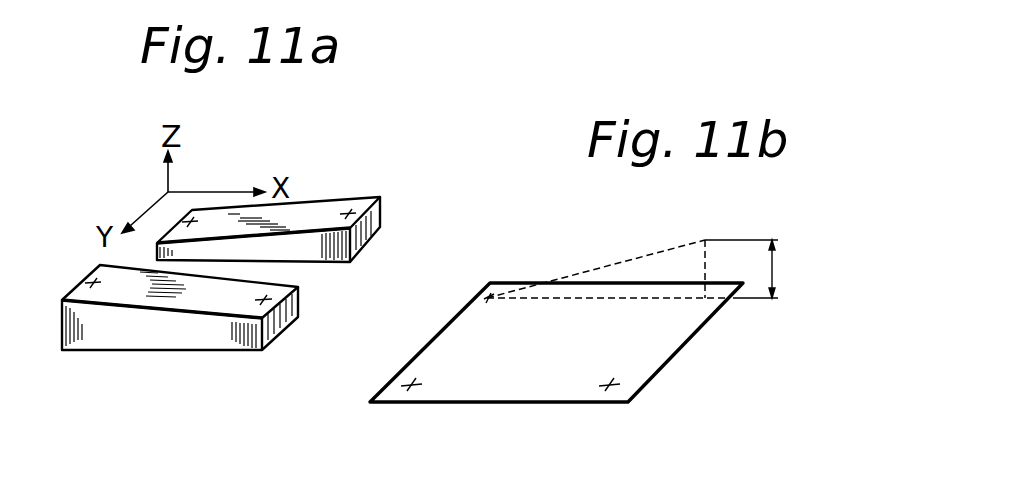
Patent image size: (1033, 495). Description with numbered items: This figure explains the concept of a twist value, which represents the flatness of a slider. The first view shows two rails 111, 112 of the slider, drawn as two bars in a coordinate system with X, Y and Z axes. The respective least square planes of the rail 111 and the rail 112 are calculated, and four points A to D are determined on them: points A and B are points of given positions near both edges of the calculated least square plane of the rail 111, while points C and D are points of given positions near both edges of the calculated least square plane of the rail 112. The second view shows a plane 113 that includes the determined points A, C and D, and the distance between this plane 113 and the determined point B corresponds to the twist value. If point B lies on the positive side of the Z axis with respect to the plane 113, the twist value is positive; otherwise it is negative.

In FIG. 11A, the rail 111 is at (317, 200).
In FIG. 11A, the rail 112 is at (205, 305).
In FIG. 11B, the plane 113 is at (657, 352).